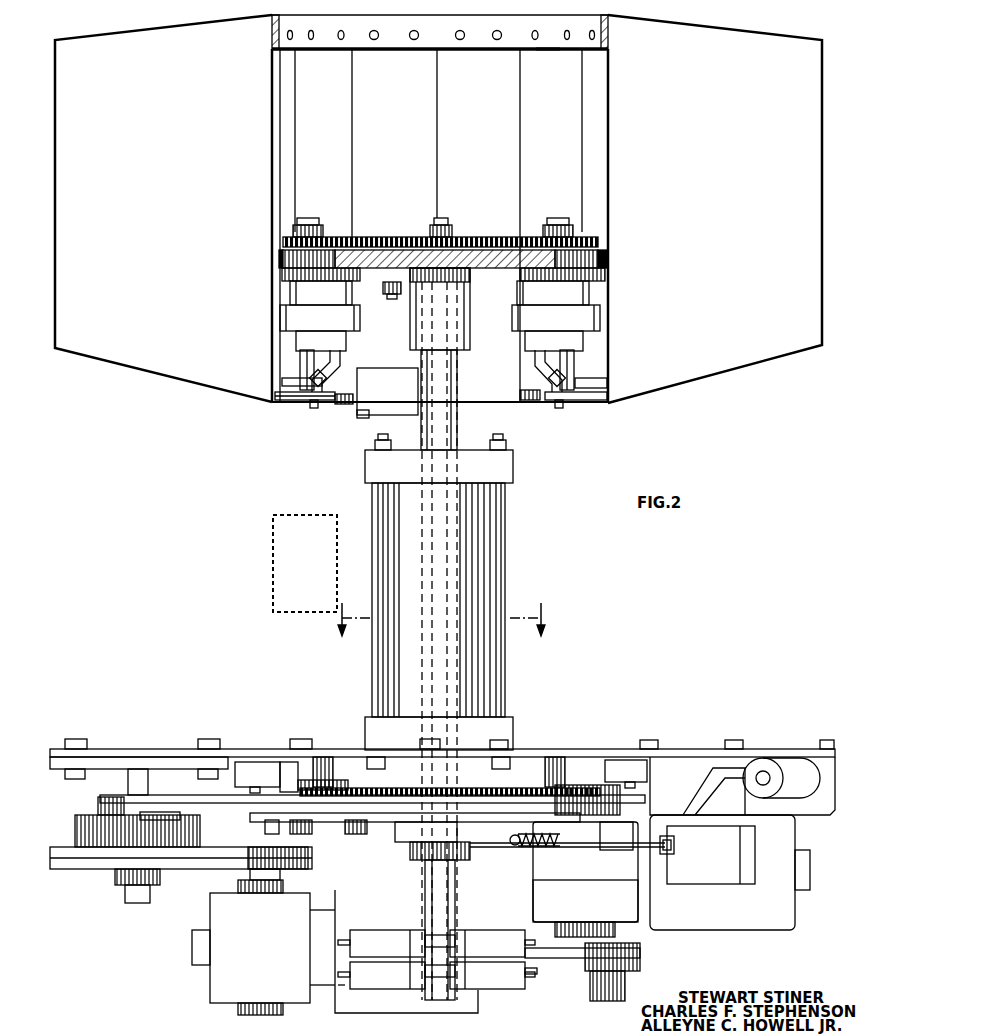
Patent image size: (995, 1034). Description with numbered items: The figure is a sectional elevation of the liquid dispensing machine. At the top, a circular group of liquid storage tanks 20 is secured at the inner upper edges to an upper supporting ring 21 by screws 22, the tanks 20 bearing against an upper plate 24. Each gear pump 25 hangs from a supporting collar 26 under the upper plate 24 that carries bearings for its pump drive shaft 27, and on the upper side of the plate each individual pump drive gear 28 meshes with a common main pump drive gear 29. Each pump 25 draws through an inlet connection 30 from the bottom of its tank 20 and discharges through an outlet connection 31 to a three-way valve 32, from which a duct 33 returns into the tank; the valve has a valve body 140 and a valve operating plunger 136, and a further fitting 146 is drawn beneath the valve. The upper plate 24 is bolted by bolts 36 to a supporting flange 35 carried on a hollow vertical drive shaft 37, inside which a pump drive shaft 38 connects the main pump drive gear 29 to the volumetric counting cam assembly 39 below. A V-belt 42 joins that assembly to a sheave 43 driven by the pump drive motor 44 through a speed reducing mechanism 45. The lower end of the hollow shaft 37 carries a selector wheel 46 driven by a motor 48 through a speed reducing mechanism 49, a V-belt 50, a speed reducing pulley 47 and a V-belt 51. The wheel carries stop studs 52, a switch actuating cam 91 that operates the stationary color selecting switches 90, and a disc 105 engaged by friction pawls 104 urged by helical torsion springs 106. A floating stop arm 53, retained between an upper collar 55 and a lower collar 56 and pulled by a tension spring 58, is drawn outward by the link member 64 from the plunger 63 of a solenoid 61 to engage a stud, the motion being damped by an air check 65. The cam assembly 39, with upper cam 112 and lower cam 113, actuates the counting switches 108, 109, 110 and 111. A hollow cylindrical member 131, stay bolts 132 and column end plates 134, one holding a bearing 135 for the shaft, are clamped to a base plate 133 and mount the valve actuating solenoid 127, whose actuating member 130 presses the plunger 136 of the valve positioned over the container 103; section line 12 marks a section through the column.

The liquid storage tank 20 is at (191, 134).
The upper supporting ring 21 is at (548, 51).
The screw 22 is at (343, 38).
The upper plate 24 is at (608, 259).
The gear pump 25 is at (600, 315).
The supporting collar 26 is at (282, 274).
The pump drive shaft 27 is at (297, 221).
The individual pump drive gear 28 is at (320, 237).
The main pump drive gear 29 is at (368, 237).
The inlet connection 30 is at (338, 372).
The outlet connection 31 is at (300, 362).
The three-way valve 32 is at (303, 410).
The duct 33 is at (285, 380).
The supporting flange 35 is at (470, 312).
The bolt 36 is at (393, 299).
The hollow vertical drive shaft 37 is at (458, 420).
The pump drive shaft 38 is at (445, 225).
The volumetric counting cam assembly 39 is at (508, 992).
The V-belt 42 is at (640, 957).
The sheave 43 is at (620, 980).
The pump drive motor 44 is at (730, 930).
The speed reducing mechanism 45 is at (640, 915).
The selector wheel 46 is at (375, 843).
The speed reducing pulley 47 is at (200, 834).
The motor 48 is at (357, 1005).
The speed reducing mechanism 49 is at (218, 947).
The V-belt 50 is at (197, 870).
The V-belt 51 is at (198, 805).
The stop stud 52 is at (345, 830).
The floating stop arm 53 is at (628, 836).
The upper collar 55 is at (400, 845).
The lower collar 56 is at (466, 850).
The tension spring 58 is at (540, 850).
The solenoid 61 is at (720, 884).
The spring-pressed plunger 63 is at (666, 856).
The link member 64 is at (640, 858).
The air check 65 is at (778, 760).
The stationary color selecting switch 90 is at (245, 765).
The switch actuating cam 91 is at (287, 766).
The container 103 is at (273, 542).
The friction pawl 104 is at (340, 787).
The disc 105 is at (500, 790).
The helical torsion spring 106 is at (312, 780).
The cam actuated volumetric counting switch 108 is at (488, 936).
The cam actuated volumetric counting switch 109 is at (378, 936).
The cam actuated volumetric counting switch 110 is at (488, 989).
The cam actuated volumetric counting switch 111 is at (360, 984).
The upper cam 112 is at (357, 945).
The lower cam 113 is at (533, 978).
The valve actuating solenoid 127 is at (362, 416).
The actuating member 130 is at (354, 384).
The hollow cylindrical member 131 is at (485, 555).
The stay bolt 132 is at (505, 508).
The base plate 133 is at (686, 749).
The column end plate 134 is at (513, 465).
The bearing 135 is at (458, 446).
The valve operating plunger 136 is at (340, 406).
The valve body 140 is at (293, 398).
The fitting 146 is at (306, 408).
The section line 12 is at (443, 630).